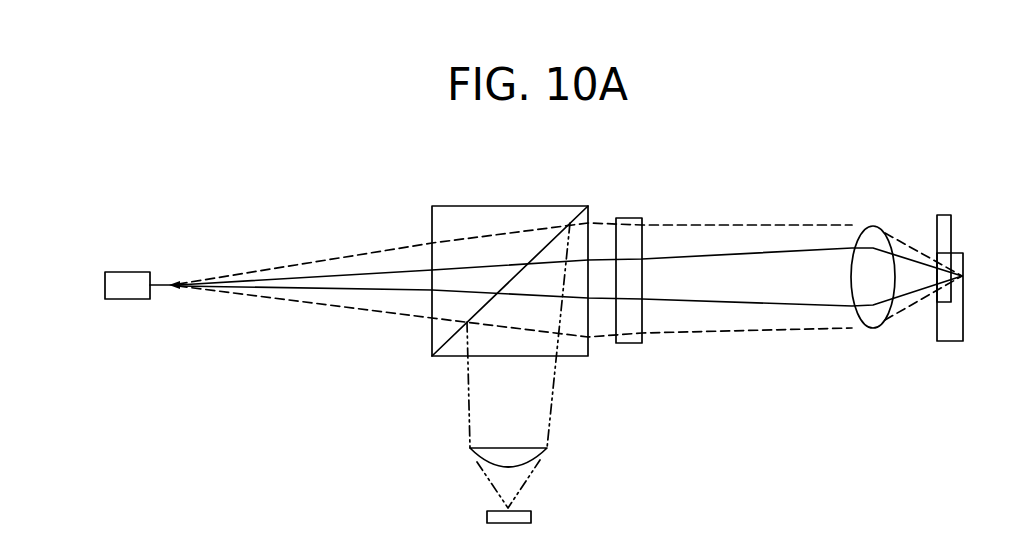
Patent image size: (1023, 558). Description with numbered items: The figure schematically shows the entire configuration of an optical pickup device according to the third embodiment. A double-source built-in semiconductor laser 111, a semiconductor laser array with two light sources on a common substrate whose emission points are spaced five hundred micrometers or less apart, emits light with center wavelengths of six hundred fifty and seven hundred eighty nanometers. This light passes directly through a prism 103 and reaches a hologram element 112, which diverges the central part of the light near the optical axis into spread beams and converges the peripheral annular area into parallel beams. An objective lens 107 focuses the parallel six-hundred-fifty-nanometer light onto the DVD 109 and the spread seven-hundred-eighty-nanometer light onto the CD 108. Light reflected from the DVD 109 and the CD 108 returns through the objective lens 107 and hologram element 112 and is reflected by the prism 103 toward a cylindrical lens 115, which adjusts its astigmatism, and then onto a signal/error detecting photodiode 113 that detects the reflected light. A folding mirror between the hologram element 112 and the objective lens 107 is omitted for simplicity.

The double-source built-in semiconductor laser 111 is at (127, 272).
The prism 103 is at (436, 338).
The hologram element 112 is at (631, 218).
The objective lens 107 is at (867, 240).
The DVD 109 is at (943, 228).
The CD 108 is at (950, 330).
The cylindrical lens 115 is at (532, 454).
The signal/error detecting photodiode 113 is at (531, 517).